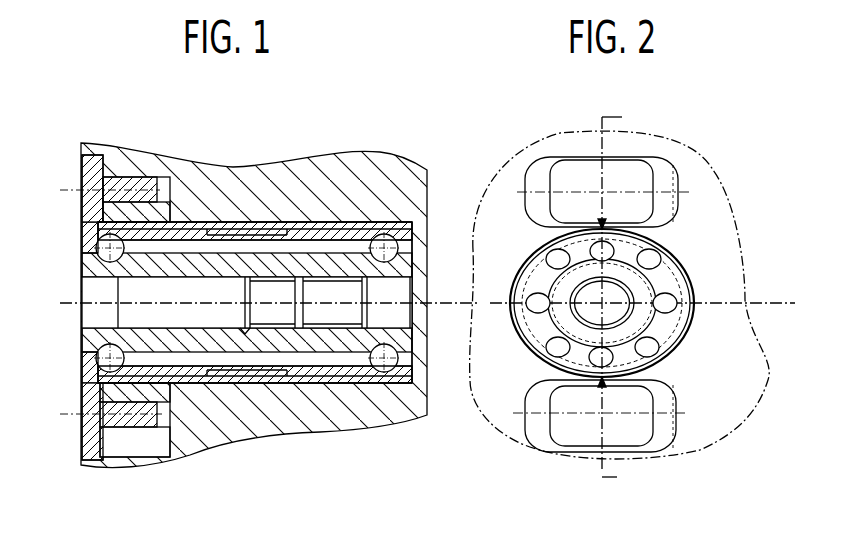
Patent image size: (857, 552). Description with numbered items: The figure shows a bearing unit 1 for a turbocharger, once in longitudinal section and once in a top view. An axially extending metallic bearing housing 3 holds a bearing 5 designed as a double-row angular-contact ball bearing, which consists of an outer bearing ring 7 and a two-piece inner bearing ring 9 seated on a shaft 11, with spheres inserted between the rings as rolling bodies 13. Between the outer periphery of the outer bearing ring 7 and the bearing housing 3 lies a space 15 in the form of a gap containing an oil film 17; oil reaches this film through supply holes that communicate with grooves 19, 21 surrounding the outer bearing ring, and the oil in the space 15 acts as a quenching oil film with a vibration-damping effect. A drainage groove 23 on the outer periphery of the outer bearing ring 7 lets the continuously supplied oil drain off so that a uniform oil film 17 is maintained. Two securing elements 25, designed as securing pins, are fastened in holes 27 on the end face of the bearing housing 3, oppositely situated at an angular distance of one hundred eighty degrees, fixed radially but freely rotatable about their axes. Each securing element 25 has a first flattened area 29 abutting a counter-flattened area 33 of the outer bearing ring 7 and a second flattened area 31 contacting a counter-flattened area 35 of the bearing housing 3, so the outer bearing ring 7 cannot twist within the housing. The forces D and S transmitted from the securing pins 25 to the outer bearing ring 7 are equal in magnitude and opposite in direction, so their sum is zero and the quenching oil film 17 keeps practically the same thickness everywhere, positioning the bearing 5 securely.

In FIG. 1, the bearing unit 1 is at (437, 137).
In FIG. 2, the bearing unit 1 is at (750, 140).
In FIG. 1, the bearing housing 3 is at (115, 173).
In FIG. 2, the bearing housing 3 is at (736, 326).
In FIG. 1, the bearing 5 is at (81, 240).
In FIG. 1, the outer bearing ring 7 is at (403, 230).
In FIG. 2, the outer bearing ring 7 is at (720, 292).
In FIG. 1, the inner bearing ring 9 is at (98, 268).
In FIG. 2, the inner bearing ring 9 is at (687, 274).
In FIG. 1, the shaft 11 is at (100, 303).
In FIG. 2, the shaft 11 is at (597, 308).
In FIG. 1, the rolling bodies 13 is at (97, 248).
In FIG. 2, the rolling bodies 13 is at (648, 348).
In FIG. 1, the space 15 is at (300, 227).
In FIG. 1, the oil film 17 is at (268, 304).
In FIG. 1, the groove 19 is at (175, 227).
In FIG. 1, the groove 21 is at (322, 227).
In FIG. 1, the drainage groove 23 is at (248, 227).
In FIG. 1, the securing elements 25 is at (95, 187).
In FIG. 2, the securing elements 25 is at (630, 178).
In FIG. 1, the holes 27 is at (167, 185).
In FIG. 2, the holes 27 is at (666, 179).
In FIG. 2, the first flattened area 29 is at (600, 381).
In FIG. 2, the second flattened area 31 is at (603, 453).
In FIG. 2, the counter-flattened area 33 is at (600, 381).
In FIG. 2, the counter-flattened area 35 is at (604, 452).
In FIG. 2, the force D is at (602, 193).
In FIG. 2, the force S is at (660, 452).